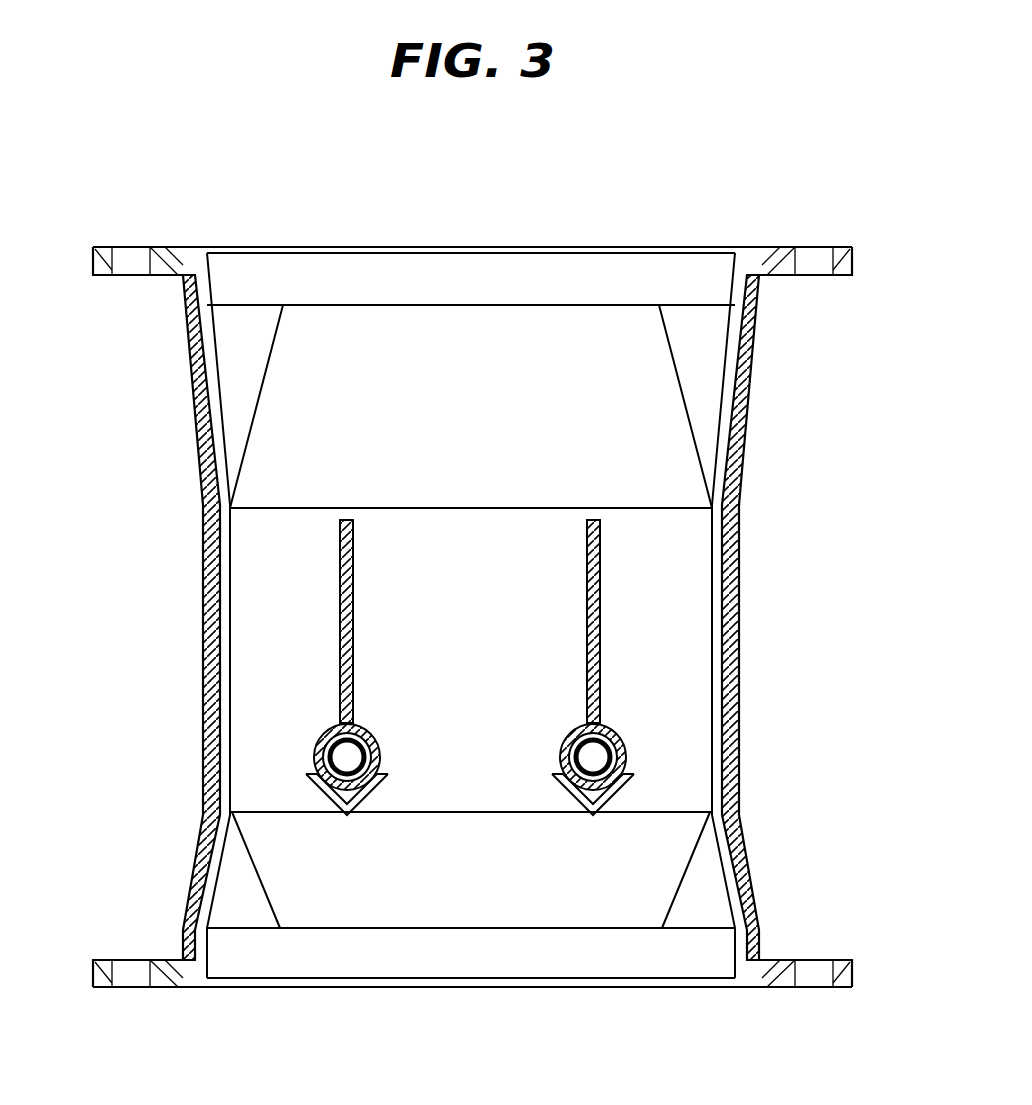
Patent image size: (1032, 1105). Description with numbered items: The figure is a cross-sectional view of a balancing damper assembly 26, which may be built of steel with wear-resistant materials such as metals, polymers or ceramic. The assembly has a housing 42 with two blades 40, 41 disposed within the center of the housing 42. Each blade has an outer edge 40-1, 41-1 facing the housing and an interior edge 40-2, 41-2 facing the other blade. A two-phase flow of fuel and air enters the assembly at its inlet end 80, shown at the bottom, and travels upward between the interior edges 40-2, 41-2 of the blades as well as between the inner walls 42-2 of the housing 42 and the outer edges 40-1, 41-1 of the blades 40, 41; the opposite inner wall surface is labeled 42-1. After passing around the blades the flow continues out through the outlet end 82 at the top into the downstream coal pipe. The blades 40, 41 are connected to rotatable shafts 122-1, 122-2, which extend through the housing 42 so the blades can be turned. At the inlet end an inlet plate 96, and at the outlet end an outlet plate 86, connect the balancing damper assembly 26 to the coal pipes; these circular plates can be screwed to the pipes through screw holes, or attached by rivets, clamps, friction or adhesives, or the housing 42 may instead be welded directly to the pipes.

The balancing damper assembly 26 is at (756, 133).
The outlet end 82 is at (436, 217).
The outlet plate 86 is at (815, 247).
The inlet end 80 is at (436, 1006).
The inlet plate 96 is at (813, 987).
The housing 42 is at (172, 477).
The right inner wall surface 42-1 is at (710, 562).
The inner wall 42-2 is at (232, 562).
The blade 40 is at (348, 511).
The outer edge 40-1 is at (340, 597).
The interior edge 40-2 is at (355, 640).
The blade 41 is at (593, 511).
The outer edge 41-1 is at (600, 597).
The interior edge 41-2 is at (587, 640).
The rotatable shaft 122-1 is at (381, 757).
The rotatable shaft 122-2 is at (577, 730).